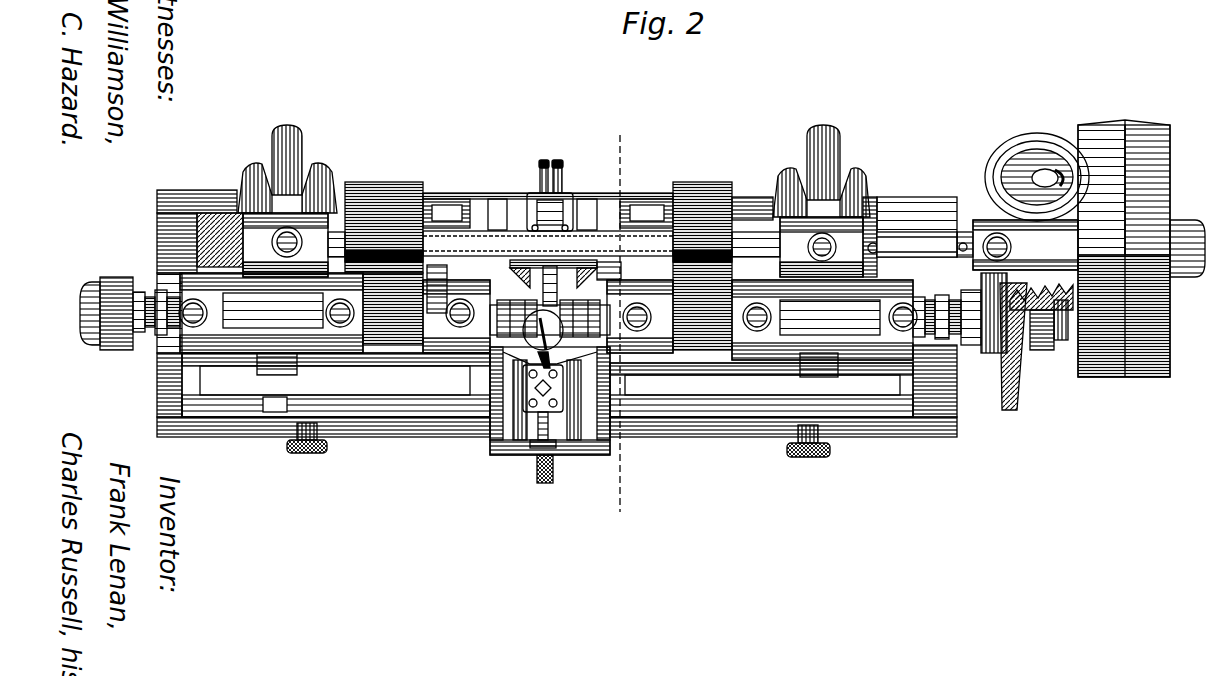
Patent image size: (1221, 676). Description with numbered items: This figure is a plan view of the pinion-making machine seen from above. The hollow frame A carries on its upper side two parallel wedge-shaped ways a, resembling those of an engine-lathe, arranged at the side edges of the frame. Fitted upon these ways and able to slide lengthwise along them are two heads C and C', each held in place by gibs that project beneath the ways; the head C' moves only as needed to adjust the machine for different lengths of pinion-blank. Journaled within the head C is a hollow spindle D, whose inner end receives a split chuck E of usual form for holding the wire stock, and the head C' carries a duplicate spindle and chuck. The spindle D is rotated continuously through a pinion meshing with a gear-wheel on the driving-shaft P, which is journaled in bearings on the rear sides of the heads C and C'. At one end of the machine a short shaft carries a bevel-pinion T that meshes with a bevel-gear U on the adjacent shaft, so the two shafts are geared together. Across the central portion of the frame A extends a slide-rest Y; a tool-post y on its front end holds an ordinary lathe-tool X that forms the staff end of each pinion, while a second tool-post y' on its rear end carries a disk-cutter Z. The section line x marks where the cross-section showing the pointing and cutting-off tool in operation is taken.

The way a is at (944, 437).
The frame A is at (557, 437).
The head C is at (336, 385).
The head C' is at (761, 385).
The driving-shaft P is at (914, 230).
The disk-cutter Z is at (530, 215).
The tool-post y' is at (566, 181).
The section line x is at (613, 321).
The hollow spindle D is at (523, 372).
The split chuck E is at (543, 330).
The lathe-tool X is at (551, 354).
The tool-post y is at (508, 445).
The slide-rest Y is at (550, 415).
The bevel-pinion T is at (1044, 348).
The bevel-gear U is at (1018, 376).